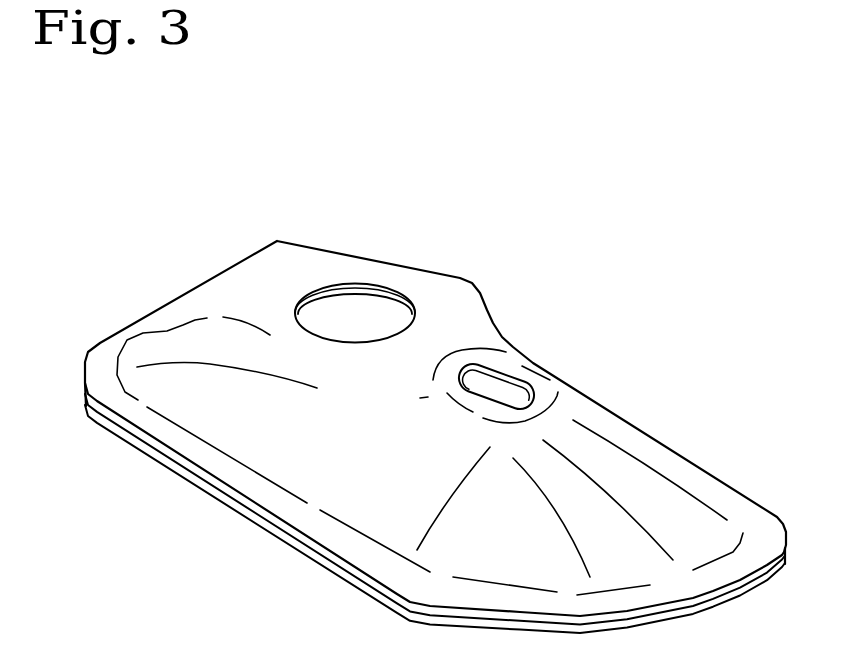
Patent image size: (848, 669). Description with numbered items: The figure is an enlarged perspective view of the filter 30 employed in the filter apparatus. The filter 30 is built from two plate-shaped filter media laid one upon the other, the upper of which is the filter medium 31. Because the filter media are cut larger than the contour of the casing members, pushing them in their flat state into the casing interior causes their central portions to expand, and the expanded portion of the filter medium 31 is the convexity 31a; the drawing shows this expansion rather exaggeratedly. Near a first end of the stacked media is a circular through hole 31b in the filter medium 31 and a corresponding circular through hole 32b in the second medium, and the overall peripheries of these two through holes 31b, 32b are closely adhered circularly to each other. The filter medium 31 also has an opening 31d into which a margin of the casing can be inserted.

The filter 30 is at (155, 276).
The filter medium 31 is at (450, 300).
The convexity 31a is at (627, 478).
The circular through hole 31b is at (312, 293).
The circular through hole 32b is at (368, 294).
The opening 31d is at (523, 394).